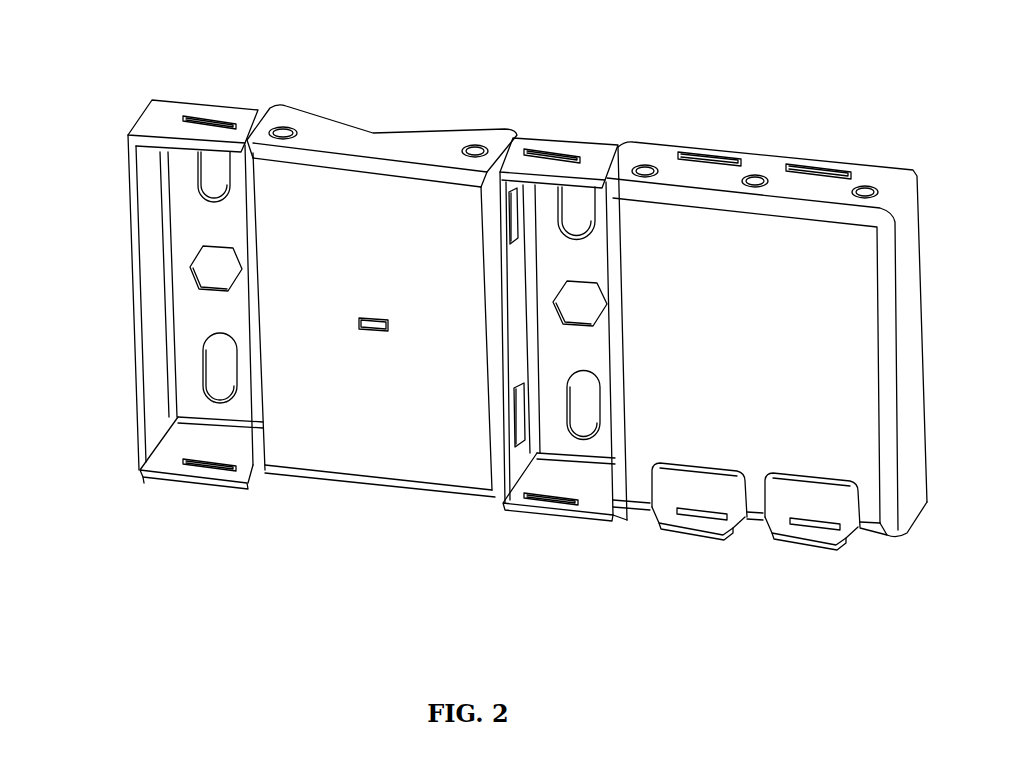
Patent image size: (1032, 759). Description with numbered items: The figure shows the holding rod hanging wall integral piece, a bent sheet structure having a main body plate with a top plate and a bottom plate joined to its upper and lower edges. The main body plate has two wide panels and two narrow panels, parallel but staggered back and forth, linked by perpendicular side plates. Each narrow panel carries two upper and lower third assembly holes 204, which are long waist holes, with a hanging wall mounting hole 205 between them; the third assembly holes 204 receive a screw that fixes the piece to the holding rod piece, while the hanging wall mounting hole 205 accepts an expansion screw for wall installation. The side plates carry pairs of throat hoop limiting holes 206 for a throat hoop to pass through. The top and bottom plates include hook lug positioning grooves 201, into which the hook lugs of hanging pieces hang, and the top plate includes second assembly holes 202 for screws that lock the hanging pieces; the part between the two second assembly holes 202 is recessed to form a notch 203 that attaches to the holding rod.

The hook lug positioning groove 201 is at (212, 108).
The second assembly hole 202 is at (292, 128).
The notch 203 is at (376, 128).
The third assembly hole 204 is at (218, 162).
The hanging wall mounting hole 205 is at (218, 268).
The throat hoop limiting hole 206 is at (520, 440).